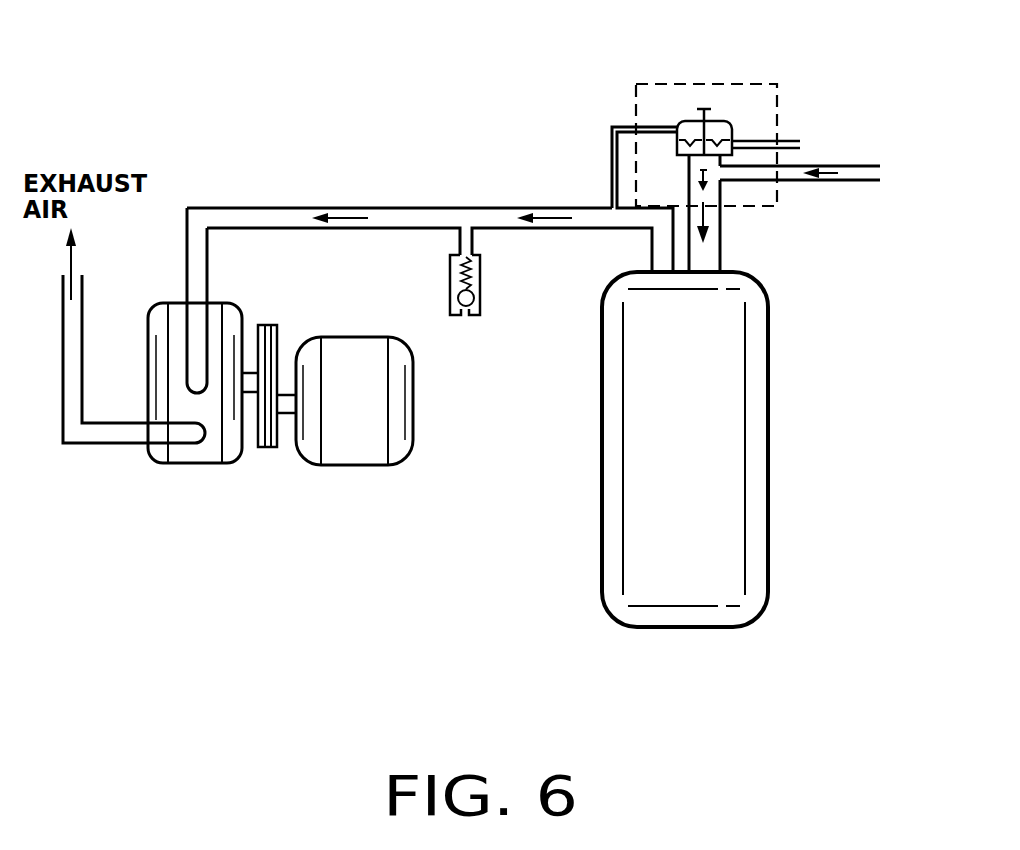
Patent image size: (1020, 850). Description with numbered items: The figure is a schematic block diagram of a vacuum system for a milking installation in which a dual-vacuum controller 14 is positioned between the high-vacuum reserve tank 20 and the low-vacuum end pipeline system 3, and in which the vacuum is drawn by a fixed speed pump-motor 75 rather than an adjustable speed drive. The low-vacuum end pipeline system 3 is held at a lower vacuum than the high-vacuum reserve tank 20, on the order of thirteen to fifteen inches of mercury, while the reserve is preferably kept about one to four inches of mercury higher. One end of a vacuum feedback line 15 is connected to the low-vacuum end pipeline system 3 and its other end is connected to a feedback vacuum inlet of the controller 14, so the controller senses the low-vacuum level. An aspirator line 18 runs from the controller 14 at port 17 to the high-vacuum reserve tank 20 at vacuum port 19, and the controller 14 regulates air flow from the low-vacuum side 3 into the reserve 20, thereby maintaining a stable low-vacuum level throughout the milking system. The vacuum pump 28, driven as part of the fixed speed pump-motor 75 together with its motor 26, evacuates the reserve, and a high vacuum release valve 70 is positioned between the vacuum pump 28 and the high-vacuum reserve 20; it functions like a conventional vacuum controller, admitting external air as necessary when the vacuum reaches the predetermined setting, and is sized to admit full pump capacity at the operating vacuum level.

The low-vacuum end pipeline system 3 is at (858, 166).
The dual-vacuum controller 14 is at (693, 84).
The vacuum feedback line 15 is at (795, 140).
The port 17 is at (627, 122).
The aspirator line 18 is at (611, 170).
The vacuum port 19 is at (307, 207).
The high-vacuum reserve tank 20 is at (710, 438).
The motor 26 is at (337, 468).
The vacuum pump 28 is at (178, 470).
The high vacuum release valve 70 is at (480, 308).
The fixed speed pump-motor 75 is at (313, 468).